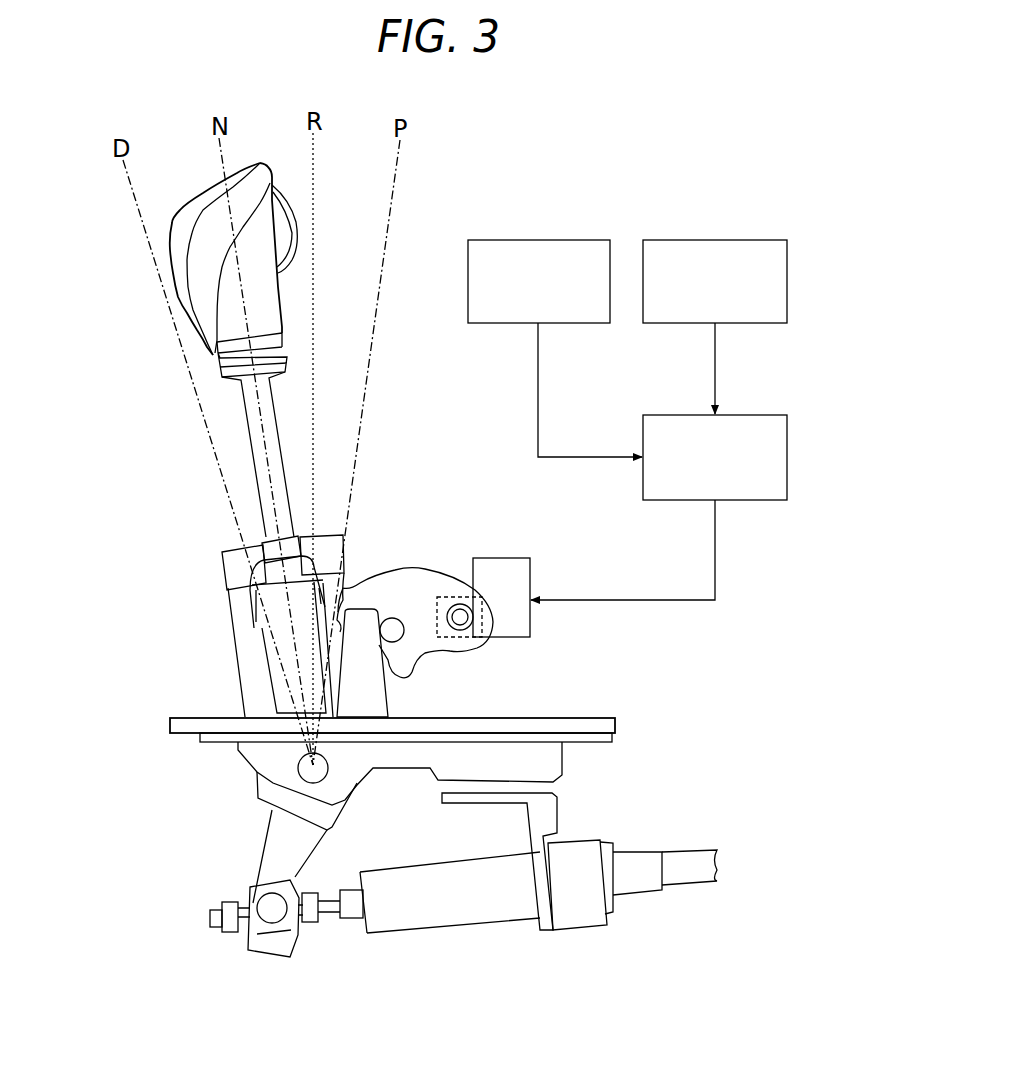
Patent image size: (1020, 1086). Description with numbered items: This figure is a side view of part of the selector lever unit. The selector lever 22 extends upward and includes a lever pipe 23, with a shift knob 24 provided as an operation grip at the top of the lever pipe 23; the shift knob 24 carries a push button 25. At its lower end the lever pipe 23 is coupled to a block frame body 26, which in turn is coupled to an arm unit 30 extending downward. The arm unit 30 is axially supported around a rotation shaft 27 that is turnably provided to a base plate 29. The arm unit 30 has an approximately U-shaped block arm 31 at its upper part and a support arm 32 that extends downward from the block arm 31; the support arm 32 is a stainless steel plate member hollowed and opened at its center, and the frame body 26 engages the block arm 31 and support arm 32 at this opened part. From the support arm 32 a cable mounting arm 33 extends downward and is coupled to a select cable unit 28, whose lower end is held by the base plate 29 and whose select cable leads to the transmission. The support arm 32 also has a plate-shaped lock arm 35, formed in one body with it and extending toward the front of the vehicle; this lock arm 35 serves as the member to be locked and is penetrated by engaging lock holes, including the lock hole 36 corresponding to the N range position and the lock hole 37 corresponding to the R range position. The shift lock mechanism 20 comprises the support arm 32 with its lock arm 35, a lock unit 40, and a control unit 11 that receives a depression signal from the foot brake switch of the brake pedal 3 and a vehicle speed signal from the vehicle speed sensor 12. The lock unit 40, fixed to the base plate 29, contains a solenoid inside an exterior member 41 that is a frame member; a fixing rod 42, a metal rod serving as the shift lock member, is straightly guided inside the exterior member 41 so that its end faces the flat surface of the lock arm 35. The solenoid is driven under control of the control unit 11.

The brake pedal 3 is at (597, 240).
The control unit 11 is at (775, 415).
The vehicle speed sensor 12 is at (775, 240).
The shift lock mechanism 20 is at (633, 195).
The selector lever 22 is at (205, 150).
The lever pipe 23 is at (246, 428).
The shift knob 24 is at (170, 256).
The push button 25 is at (296, 220).
The frame body 26 is at (268, 602).
The rotation shaft 27 is at (298, 765).
The select cable unit 28 is at (483, 930).
The base plate 29 is at (583, 717).
The arm unit 30 is at (351, 536).
The block arm 31 is at (220, 557).
The support arm 32 is at (232, 643).
The cable mounting arm 33 is at (260, 853).
The lock arm 35 is at (428, 568).
The lock hole 36 is at (460, 630).
The lock hole 37 is at (392, 618).
The lock unit 40 is at (483, 555).
The exterior member 41 is at (512, 558).
The fixing rod 42 is at (470, 625).